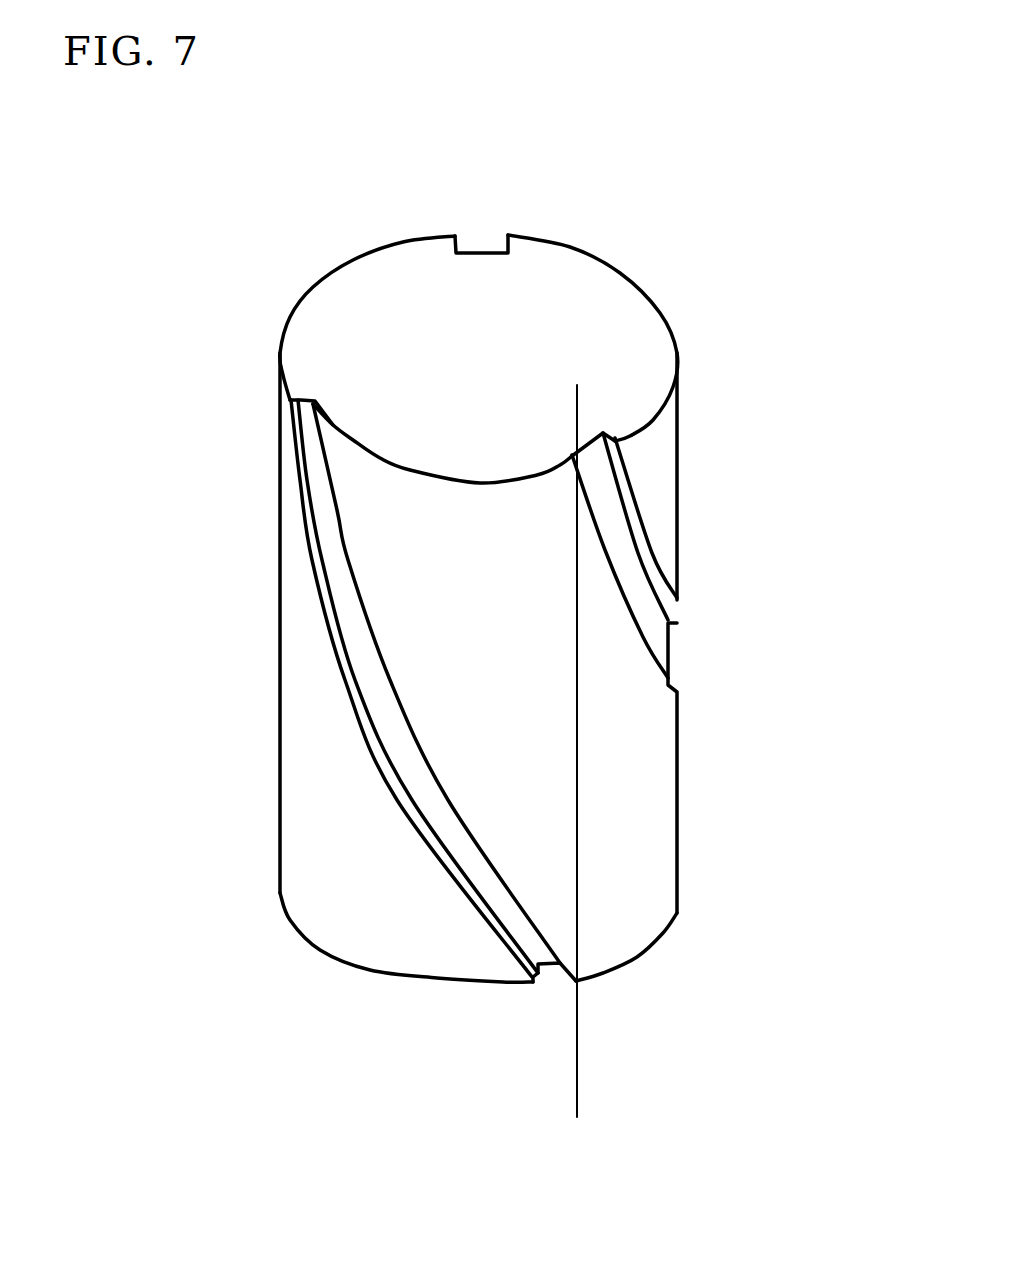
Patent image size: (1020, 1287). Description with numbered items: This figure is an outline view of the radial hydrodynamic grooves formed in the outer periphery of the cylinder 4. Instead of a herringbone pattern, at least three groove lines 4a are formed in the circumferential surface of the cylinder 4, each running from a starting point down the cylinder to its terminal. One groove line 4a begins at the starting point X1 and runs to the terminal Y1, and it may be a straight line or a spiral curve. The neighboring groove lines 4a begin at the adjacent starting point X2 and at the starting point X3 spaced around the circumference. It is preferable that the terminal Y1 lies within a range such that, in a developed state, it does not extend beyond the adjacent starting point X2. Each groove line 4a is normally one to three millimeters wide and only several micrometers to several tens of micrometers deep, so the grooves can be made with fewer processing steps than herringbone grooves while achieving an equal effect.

The cylinder 4 is at (608, 833).
The groove line 4a is at (397, 745).
The starting point of the groove line X1 is at (320, 418).
The adjacent starting point of the groove line X2 is at (583, 449).
The starting point of the groove line X3 is at (487, 238).
The terminal of the groove line Y1 is at (552, 967).